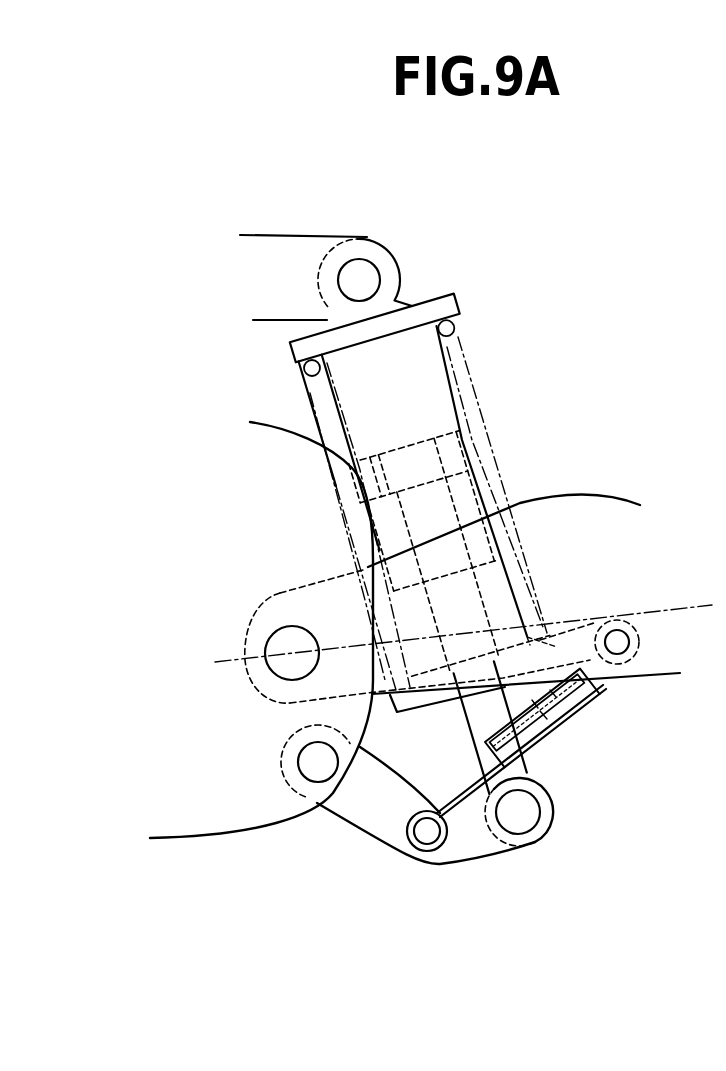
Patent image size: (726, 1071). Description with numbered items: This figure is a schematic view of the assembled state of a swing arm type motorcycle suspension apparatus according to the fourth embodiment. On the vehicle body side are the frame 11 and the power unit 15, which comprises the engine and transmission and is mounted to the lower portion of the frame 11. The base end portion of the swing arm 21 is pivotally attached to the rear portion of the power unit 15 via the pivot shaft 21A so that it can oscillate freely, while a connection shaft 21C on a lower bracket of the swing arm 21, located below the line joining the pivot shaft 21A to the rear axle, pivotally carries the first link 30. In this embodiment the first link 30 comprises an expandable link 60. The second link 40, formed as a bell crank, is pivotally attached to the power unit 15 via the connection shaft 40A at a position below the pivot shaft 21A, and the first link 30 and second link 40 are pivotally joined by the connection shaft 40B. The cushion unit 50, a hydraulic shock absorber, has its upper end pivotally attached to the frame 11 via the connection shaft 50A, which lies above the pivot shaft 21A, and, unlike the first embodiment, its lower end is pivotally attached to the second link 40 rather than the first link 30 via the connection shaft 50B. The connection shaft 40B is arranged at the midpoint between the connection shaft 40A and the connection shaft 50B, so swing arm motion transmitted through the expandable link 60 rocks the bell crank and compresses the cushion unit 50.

The frame 11 is at (277, 235).
The power unit 15 is at (253, 420).
The swing arm 21 is at (603, 497).
The pivot shaft 21A is at (289, 638).
The connection shaft 21C is at (616, 640).
The first link 30 is at (603, 690).
The second link 40 is at (358, 812).
The connection shaft 40A is at (317, 762).
The connection shaft 40B is at (426, 836).
The cushion unit 50 is at (447, 375).
The connection shaft 50A is at (362, 273).
The connection shaft 50B is at (520, 822).
The expandable link 60 is at (583, 717).